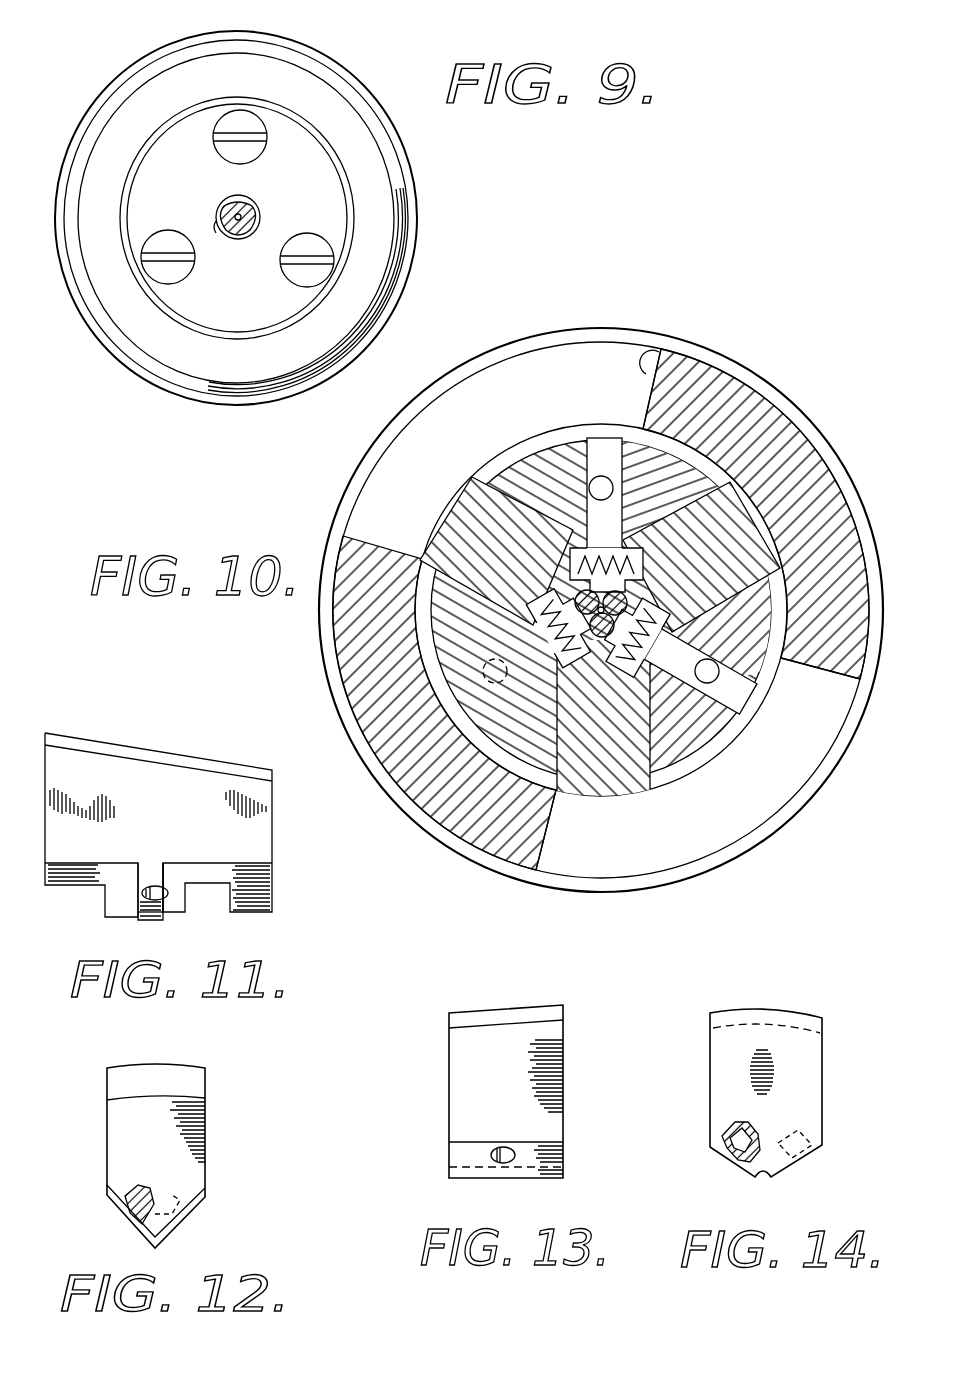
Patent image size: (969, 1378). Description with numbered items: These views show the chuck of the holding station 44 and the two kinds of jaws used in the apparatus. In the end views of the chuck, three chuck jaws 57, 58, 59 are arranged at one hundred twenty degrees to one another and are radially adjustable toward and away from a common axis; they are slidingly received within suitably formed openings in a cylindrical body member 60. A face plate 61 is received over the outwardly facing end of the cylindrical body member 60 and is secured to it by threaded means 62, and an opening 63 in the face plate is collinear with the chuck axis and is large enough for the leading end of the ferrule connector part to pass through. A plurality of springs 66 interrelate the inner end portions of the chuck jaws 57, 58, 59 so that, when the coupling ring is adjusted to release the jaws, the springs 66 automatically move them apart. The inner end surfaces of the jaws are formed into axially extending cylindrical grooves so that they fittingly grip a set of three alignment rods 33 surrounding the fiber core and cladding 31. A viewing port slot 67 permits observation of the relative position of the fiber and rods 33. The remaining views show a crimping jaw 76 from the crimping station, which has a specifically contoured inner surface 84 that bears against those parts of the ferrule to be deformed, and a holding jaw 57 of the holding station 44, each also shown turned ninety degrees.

In FIG. 9, the core and cladding 31 is at (258, 221).
In FIG. 9, the alignment rods 33 is at (256, 203).
In FIG. 10, the alignment rods 33 is at (578, 598).
In FIG. 9, the holding station 44 is at (333, 55).
In FIG. 10, the holding station 44 is at (824, 423).
In FIG. 10, the chuck jaw 57 is at (747, 512).
In FIG. 13, the chuck jaw 57 is at (563, 1028).
In FIG. 14, the chuck jaw 57 is at (795, 1010).
In FIG. 10, the chuck jaw 58 is at (448, 512).
In FIG. 10, the chuck jaw 59 is at (622, 790).
In FIG. 10, the cylindrical body member 60 is at (455, 640).
In FIG. 9, the face plate 61 is at (333, 197).
In FIG. 9, the threaded means 62 is at (323, 277).
In FIG. 10, the threaded means 62 is at (602, 476).
In FIG. 9, the opening 63 is at (215, 222).
In FIG. 10, the springs 66 is at (575, 566).
In FIG. 10, the viewing port slot 67 is at (655, 358).
In FIG. 11, the crimping jaw 76 is at (100, 757).
In FIG. 12, the crimping jaw 76 is at (205, 1108).
In FIG. 11, the contoured inner surface 84 is at (150, 925).